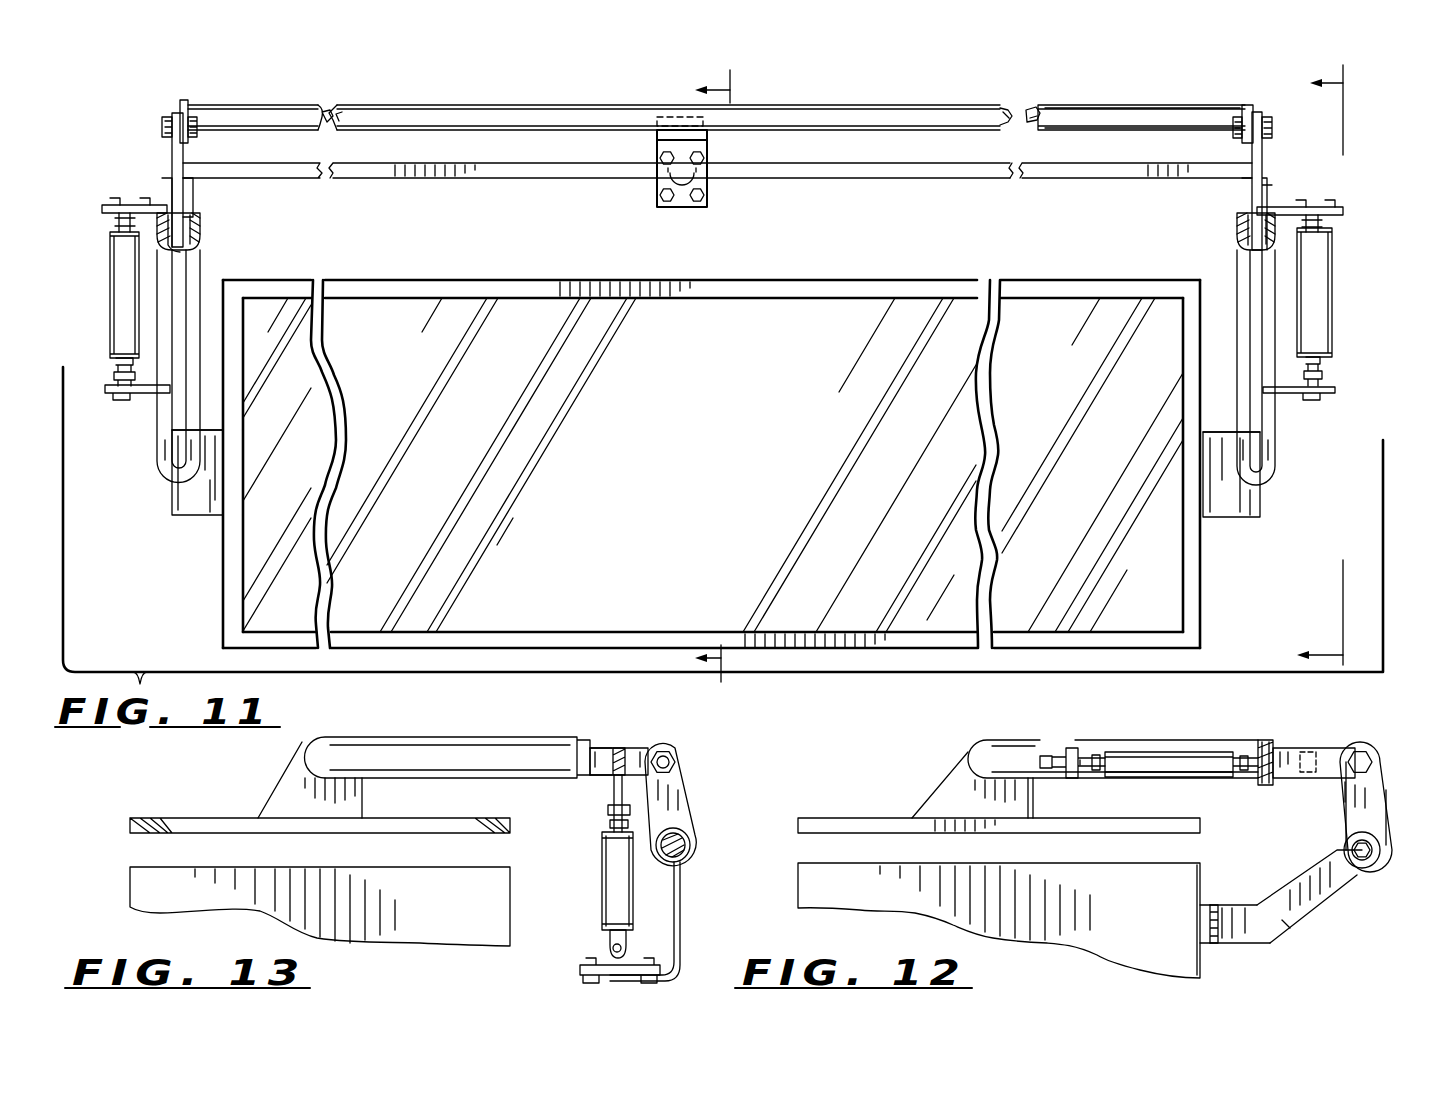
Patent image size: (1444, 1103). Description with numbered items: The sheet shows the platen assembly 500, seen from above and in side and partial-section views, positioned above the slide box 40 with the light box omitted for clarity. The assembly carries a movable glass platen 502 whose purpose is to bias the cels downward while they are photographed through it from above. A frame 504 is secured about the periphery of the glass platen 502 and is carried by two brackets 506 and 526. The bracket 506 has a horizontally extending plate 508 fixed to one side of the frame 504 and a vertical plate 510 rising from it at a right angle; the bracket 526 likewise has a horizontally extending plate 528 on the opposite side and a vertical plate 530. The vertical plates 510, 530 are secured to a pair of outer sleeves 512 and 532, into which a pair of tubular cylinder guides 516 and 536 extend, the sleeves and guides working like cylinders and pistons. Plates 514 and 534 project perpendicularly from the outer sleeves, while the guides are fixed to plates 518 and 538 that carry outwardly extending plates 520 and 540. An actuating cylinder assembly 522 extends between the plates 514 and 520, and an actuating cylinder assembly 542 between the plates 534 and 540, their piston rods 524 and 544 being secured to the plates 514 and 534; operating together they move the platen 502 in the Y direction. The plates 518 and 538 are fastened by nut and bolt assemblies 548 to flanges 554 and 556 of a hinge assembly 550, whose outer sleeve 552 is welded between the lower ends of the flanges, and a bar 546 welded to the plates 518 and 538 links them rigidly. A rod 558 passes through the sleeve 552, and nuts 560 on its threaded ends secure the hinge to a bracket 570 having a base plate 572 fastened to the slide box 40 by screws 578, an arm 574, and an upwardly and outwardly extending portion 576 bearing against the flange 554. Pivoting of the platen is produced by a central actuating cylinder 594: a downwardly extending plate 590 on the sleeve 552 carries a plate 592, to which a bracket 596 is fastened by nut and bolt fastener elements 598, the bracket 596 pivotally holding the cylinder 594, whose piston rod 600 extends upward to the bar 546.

In FIG. 13, the slide box 40 is at (142, 913).
In FIG. 12, the slide box 40 is at (868, 912).
In FIG. 11, the platen assembly 500 is at (146, 110).
In FIG. 13, the platen assembly 500 is at (725, 765).
In FIG. 12, the platen assembly 500 is at (915, 775).
In FIG. 11, the glass platen 502 is at (410, 300).
In FIG. 11, the frame 504 is at (700, 290).
In FIG. 12, the frame 504 is at (832, 818).
In FIG. 11, the bracket 506 is at (1256, 518).
In FIG. 11, the horizontally extending plate 508 is at (1228, 517).
In FIG. 11, the vertical plate 510 is at (1260, 505).
In FIG. 12, the vertical plate 510 is at (1030, 800).
In FIG. 11, the outer sleeve 512 is at (1275, 452).
In FIG. 13, the outer sleeve 512 is at (268, 795).
In FIG. 12, the outer sleeve 512 is at (1045, 745).
In FIG. 11, the plate 514 is at (1340, 393).
In FIG. 12, the plate 514 is at (1070, 748).
In FIG. 11, the cylinder guide 516 is at (1237, 232).
In FIG. 12, the cylinder guide 516 is at (1258, 745).
In FIG. 11, the plate 518 is at (1258, 176).
In FIG. 12, the plate 518 is at (1323, 752).
In FIG. 11, the outwardly extending plate 520 is at (1343, 212).
In FIG. 12, the outwardly extending plate 520 is at (1270, 740).
In FIG. 11, the actuating cylinder assembly 522 is at (1333, 328).
In FIG. 12, the actuating cylinder assembly 522 is at (1130, 754).
In FIG. 11, the piston rod 524 is at (1330, 384).
In FIG. 12, the piston rod 524 is at (1088, 770).
In FIG. 11, the bracket 526 is at (172, 517).
In FIG. 11, the horizontally extending plate 528 is at (207, 515).
In FIG. 11, the vertical plate 530 is at (170, 506).
In FIG. 11, the outer sleeve 532 is at (160, 452).
In FIG. 13, the outer sleeve 532 is at (405, 745).
In FIG. 11, the plate 534 is at (150, 395).
In FIG. 11, the cylinder guide 536 is at (200, 225).
In FIG. 13, the cylinder guide 536 is at (580, 775).
In FIG. 11, the plate 538 is at (175, 170).
In FIG. 13, the plate 538 is at (610, 722).
In FIG. 11, the outwardly extending plate 540 is at (115, 212).
In FIG. 11, the actuating cylinder assembly 542 is at (118, 278).
In FIG. 11, the piston rod 544 is at (115, 368).
In FIG. 11, the bar 546 is at (866, 176).
In FIG. 13, the bar 546 is at (617, 750).
In FIG. 12, the bar 546 is at (1308, 778).
In FIG. 11, the nut and bolt 548 is at (1272, 130).
In FIG. 13, the nut and bolt 548 is at (663, 748).
In FIG. 12, the nut and bolt 548 is at (1365, 748).
In FIG. 11, the hinge assembly 550 is at (1103, 104).
In FIG. 12, the hinge assembly 550 is at (1385, 802).
In FIG. 11, the outer sleeve 552 is at (1064, 133).
In FIG. 13, the outer sleeve 552 is at (690, 848).
In FIG. 11, the flange 554 is at (1260, 88).
In FIG. 12, the flange 554 is at (1378, 825).
In FIG. 11, the flange 556 is at (188, 100).
In FIG. 13, the flange 556 is at (682, 808).
In FIG. 11, the rod 558 is at (1040, 108).
In FIG. 13, the rod 558 is at (690, 868).
In FIG. 12, the rod 558 is at (1352, 870).
In FIG. 12, the nut 560 is at (1383, 860).
In FIG. 12, the bracket 570 is at (1302, 868).
In FIG. 12, the base plate 572 is at (1205, 948).
In FIG. 12, the arm 574 is at (1236, 904).
In FIG. 12, the upwardly and outwardly extending portion 576 is at (1290, 928).
In FIG. 12, the screw 578 is at (1225, 925).
In FIG. 11, the downwardly extending plate 590 is at (674, 116).
In FIG. 13, the downwardly extending plate 590 is at (684, 925).
In FIG. 11, the plate 592 is at (656, 135).
In FIG. 13, the plate 592 is at (605, 978).
In FIG. 11, the actuating cylinder 594 is at (665, 186).
In FIG. 13, the actuating cylinder 594 is at (605, 873).
In FIG. 11, the bracket 596 is at (708, 155).
In FIG. 13, the bracket 596 is at (604, 948).
In FIG. 11, the nut and bolt fastener element 598 is at (708, 193).
In FIG. 13, the nut and bolt fastener element 598 is at (592, 963).
In FIG. 13, the rod 600 is at (612, 786).